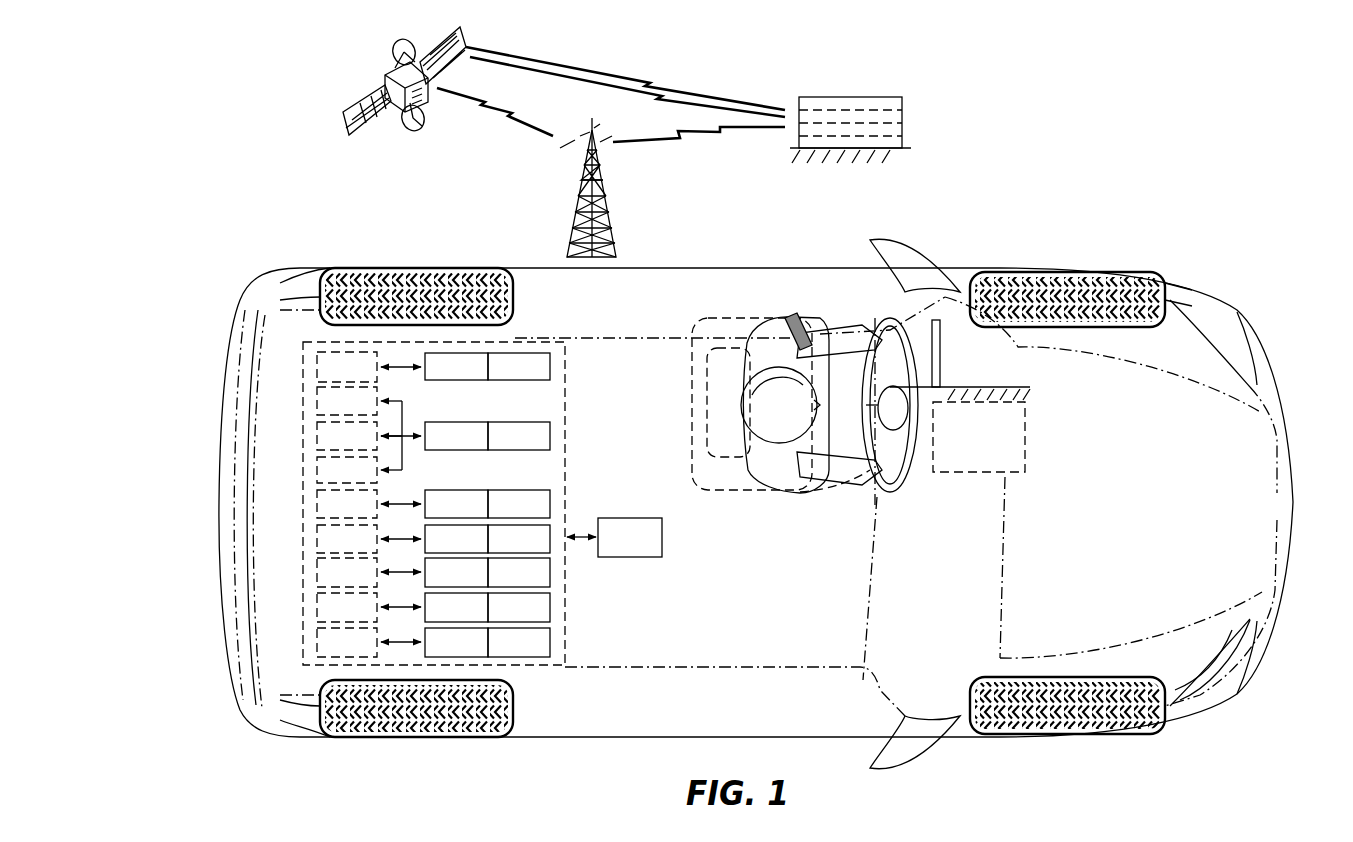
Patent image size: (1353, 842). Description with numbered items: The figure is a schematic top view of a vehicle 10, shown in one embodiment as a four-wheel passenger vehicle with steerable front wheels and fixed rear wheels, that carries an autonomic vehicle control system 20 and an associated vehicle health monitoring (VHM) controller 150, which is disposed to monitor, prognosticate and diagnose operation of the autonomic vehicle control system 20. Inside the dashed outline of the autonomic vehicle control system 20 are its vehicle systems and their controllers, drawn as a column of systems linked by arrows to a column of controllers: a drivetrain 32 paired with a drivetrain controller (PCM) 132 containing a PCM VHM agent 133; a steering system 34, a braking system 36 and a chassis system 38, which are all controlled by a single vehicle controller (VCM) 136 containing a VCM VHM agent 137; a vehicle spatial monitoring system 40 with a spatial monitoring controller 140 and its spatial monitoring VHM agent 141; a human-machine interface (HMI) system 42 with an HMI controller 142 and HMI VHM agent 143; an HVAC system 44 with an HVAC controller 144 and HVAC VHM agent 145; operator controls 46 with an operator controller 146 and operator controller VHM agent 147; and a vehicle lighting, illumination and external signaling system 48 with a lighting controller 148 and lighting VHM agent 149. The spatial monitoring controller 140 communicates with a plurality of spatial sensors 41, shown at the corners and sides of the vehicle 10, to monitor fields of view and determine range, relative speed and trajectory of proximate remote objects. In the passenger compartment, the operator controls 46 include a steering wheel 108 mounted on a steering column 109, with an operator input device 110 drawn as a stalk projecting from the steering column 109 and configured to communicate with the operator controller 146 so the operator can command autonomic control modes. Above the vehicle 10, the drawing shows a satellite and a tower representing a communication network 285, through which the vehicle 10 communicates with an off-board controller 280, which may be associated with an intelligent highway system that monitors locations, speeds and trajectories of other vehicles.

The vehicle 10 is at (288, 136).
The autonomic vehicle control system 20 is at (303, 497).
The drivetrain 32 is at (347, 367).
The steering system 34 is at (347, 401).
The braking system 36 is at (347, 436).
The chassis system 38 is at (347, 470).
The vehicle spatial monitoring system 40 is at (347, 504).
The spatial sensors 41 is at (761, 495).
The human-machine interface (HMI) system 42 is at (347, 539).
The HVAC system 44 is at (347, 572).
The operator controls 46 is at (347, 607).
The vehicle lighting, illumination and external signaling system 48 is at (347, 642).
The steering wheel 108 is at (920, 445).
The steering column 109 is at (948, 386).
The operator input device 110 is at (940, 356).
The drivetrain controller (PCM) 132 is at (456, 366).
The PCM VHM agent 133 is at (519, 366).
The vehicle controller (VCM) 136 is at (456, 436).
The VCM VHM agent 137 is at (519, 436).
The spatial monitoring controller 140 is at (456, 504).
The spatial monitoring VHM agent 141 is at (519, 504).
The HMI controller 142 is at (456, 539).
The HMI VHM agent 143 is at (519, 539).
The HVAC controller 144 is at (456, 572).
The HVAC VHM agent 145 is at (519, 572).
The operator controller 146 is at (456, 607).
The operator controller VHM agent 147 is at (519, 607).
The lighting controller 148 is at (456, 642).
The lighting VHM agent 149 is at (519, 642).
The vehicle health monitoring (VHM) controller 150 is at (630, 537).
The off-board controller 280 is at (907, 114).
The communication network 285 is at (564, 142).